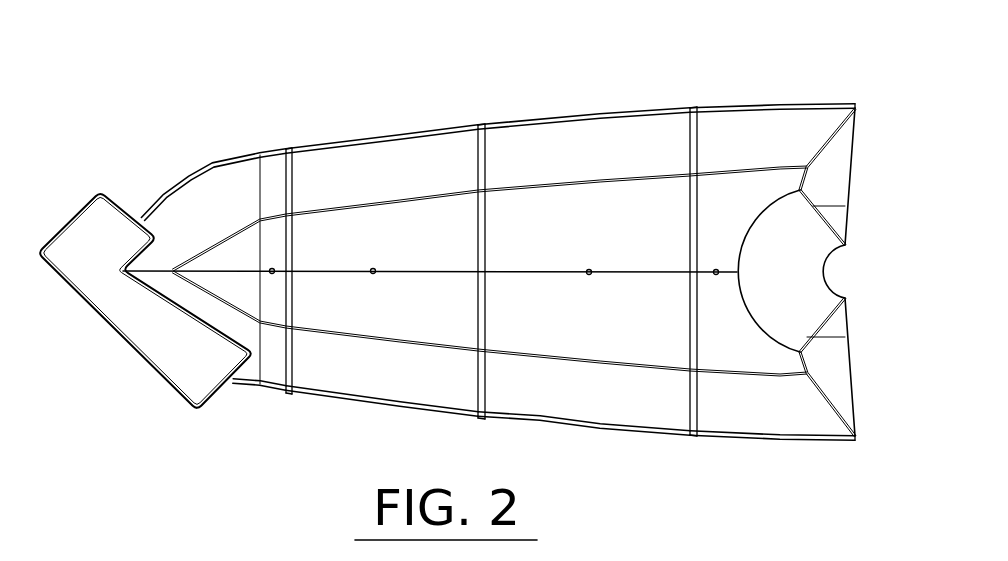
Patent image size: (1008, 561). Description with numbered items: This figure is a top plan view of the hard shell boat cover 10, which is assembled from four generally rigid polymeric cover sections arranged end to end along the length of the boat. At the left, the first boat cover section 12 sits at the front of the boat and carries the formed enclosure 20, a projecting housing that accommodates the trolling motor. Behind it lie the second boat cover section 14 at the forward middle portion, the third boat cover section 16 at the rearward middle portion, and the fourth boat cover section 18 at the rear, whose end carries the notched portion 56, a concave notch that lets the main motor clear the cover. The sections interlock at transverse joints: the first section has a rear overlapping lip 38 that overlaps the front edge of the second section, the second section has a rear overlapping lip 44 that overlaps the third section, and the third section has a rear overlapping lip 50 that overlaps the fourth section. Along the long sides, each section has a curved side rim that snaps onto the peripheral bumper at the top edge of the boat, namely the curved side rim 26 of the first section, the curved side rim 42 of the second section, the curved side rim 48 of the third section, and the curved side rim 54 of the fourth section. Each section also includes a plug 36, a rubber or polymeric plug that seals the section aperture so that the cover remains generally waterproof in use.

The hard shell boat cover 10 is at (795, 497).
The first boat cover section 12 is at (197, 212).
The second boat cover section 14 is at (348, 367).
The third boat cover section 16 is at (560, 212).
The fourth boat cover section 18 is at (755, 357).
The formed enclosure 20 is at (122, 318).
The curved side rim 26 is at (213, 166).
The plug 36 is at (373, 268).
The rear overlapping lip 38 is at (288, 187).
The curved side rim 42 is at (450, 132).
The rear overlapping lip 44 is at (486, 162).
The curved side rim 48 is at (657, 115).
The rear overlapping lip 50 is at (698, 150).
The curved side rim 54 is at (830, 103).
The notched portion 56 is at (793, 255).